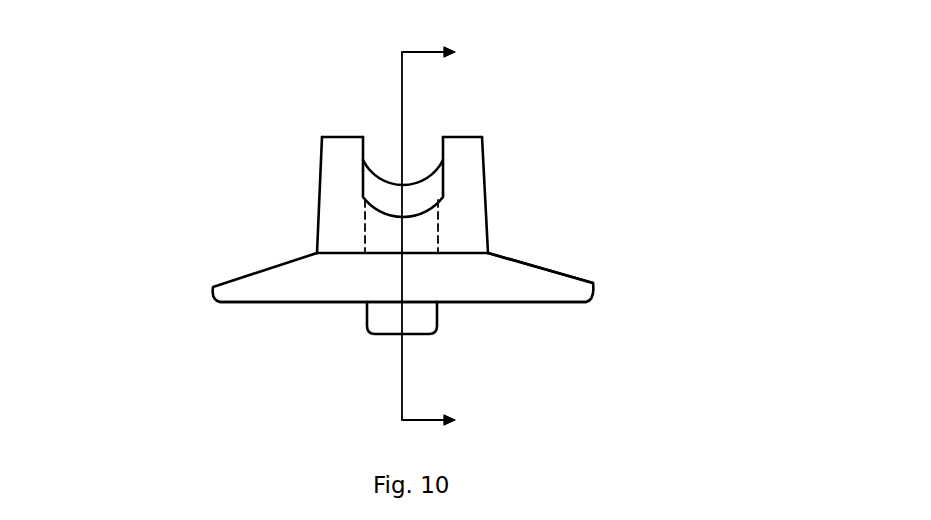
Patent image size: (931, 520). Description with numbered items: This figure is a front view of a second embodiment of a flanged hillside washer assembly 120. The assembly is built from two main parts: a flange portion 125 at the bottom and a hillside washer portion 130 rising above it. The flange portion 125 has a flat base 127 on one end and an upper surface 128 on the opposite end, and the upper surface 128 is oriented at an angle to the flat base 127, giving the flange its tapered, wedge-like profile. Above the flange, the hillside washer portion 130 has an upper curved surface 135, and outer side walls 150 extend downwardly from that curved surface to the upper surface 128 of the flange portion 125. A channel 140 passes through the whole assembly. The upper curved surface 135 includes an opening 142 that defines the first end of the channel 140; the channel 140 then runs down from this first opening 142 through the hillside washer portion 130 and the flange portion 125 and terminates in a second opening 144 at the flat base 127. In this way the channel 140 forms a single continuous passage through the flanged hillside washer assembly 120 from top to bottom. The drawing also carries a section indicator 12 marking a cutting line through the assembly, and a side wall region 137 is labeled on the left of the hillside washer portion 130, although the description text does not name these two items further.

The section line 12- 12 is at (445, 246).
The flanged hillside washer assembly 120 is at (588, 70).
The flange portion 125 is at (493, 262).
The flat base 127 is at (535, 297).
The upper surface 128 is at (543, 265).
The hillside washer portion 130 is at (483, 190).
The upper curved surface 135 is at (340, 157).
The side wall 137 is at (320, 175).
The channel 140 is at (382, 227).
The opening 142 is at (392, 157).
The second opening 144 is at (390, 298).
The outer side walls 150 is at (447, 128).